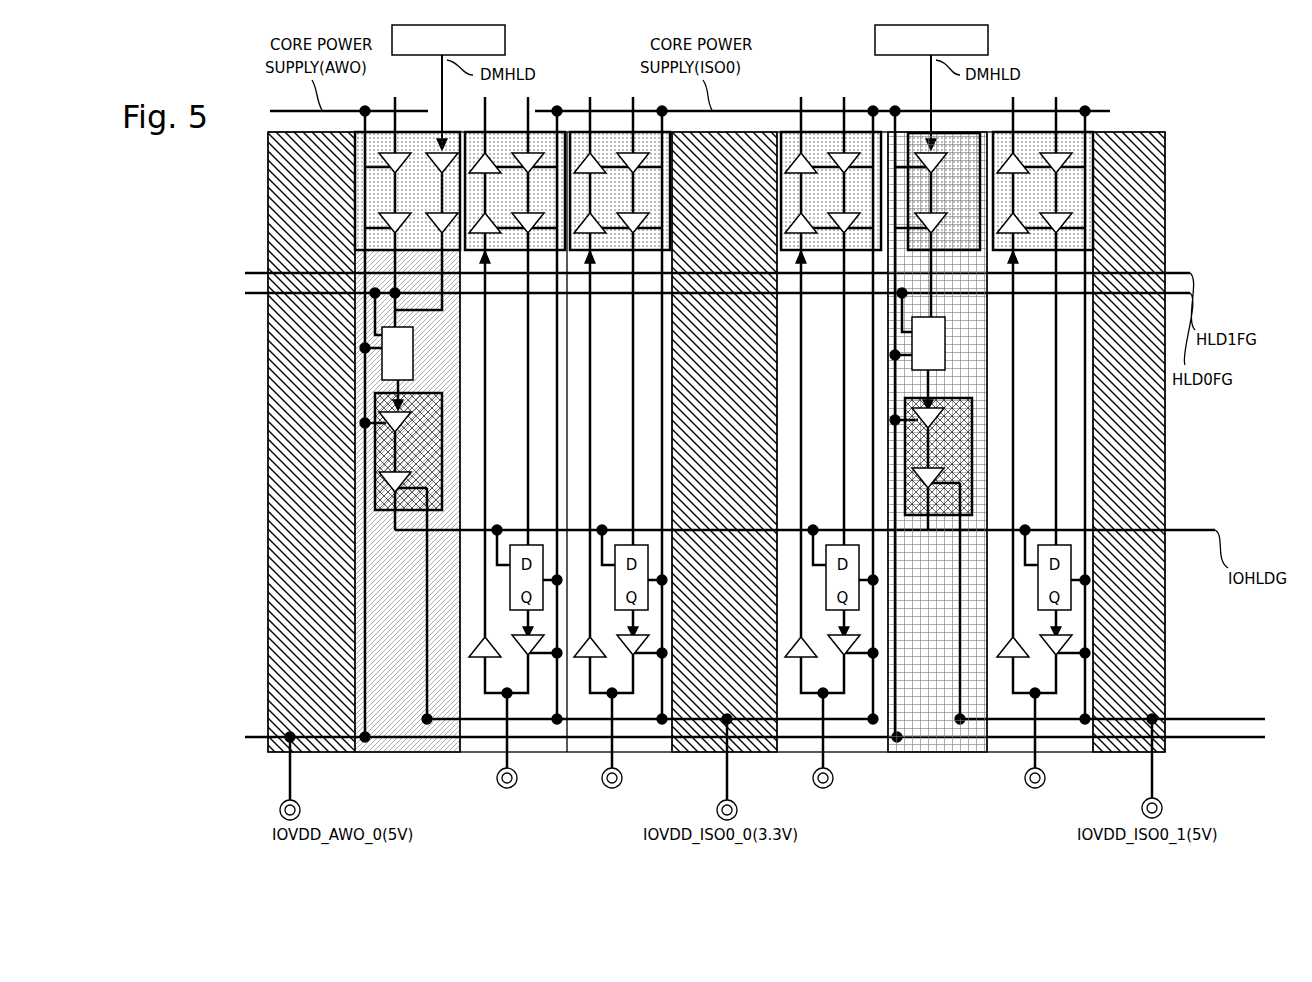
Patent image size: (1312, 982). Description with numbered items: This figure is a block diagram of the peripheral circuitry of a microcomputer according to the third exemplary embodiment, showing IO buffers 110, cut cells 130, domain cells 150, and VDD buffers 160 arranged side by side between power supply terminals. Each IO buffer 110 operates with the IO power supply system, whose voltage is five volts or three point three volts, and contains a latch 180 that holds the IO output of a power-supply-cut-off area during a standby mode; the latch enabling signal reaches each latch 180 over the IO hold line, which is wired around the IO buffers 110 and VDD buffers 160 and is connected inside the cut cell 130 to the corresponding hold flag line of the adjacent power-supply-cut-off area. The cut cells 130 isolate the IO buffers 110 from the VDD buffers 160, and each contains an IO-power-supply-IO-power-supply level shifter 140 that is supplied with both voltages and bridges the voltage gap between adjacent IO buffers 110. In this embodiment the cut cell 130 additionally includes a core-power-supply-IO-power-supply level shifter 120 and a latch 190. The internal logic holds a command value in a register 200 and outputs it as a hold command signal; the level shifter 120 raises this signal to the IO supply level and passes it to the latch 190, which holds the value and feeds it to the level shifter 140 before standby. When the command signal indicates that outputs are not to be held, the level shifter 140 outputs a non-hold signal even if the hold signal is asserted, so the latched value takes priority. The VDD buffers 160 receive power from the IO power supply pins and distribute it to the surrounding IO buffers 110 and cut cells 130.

The IO buffer 110 is at (537, 745).
The core-power-supply-IO-power-supply level shifter 120 is at (420, 138).
The cut cell 130 is at (922, 752).
The IO-power-supply-IO-power-supply level shifter 140 is at (413, 409).
The domain cell 150 is at (400, 740).
The VDD buffer 160 is at (320, 752).
The latch 180 is at (779, 637).
The latch 190 is at (413, 342).
The register 200 is at (505, 36).